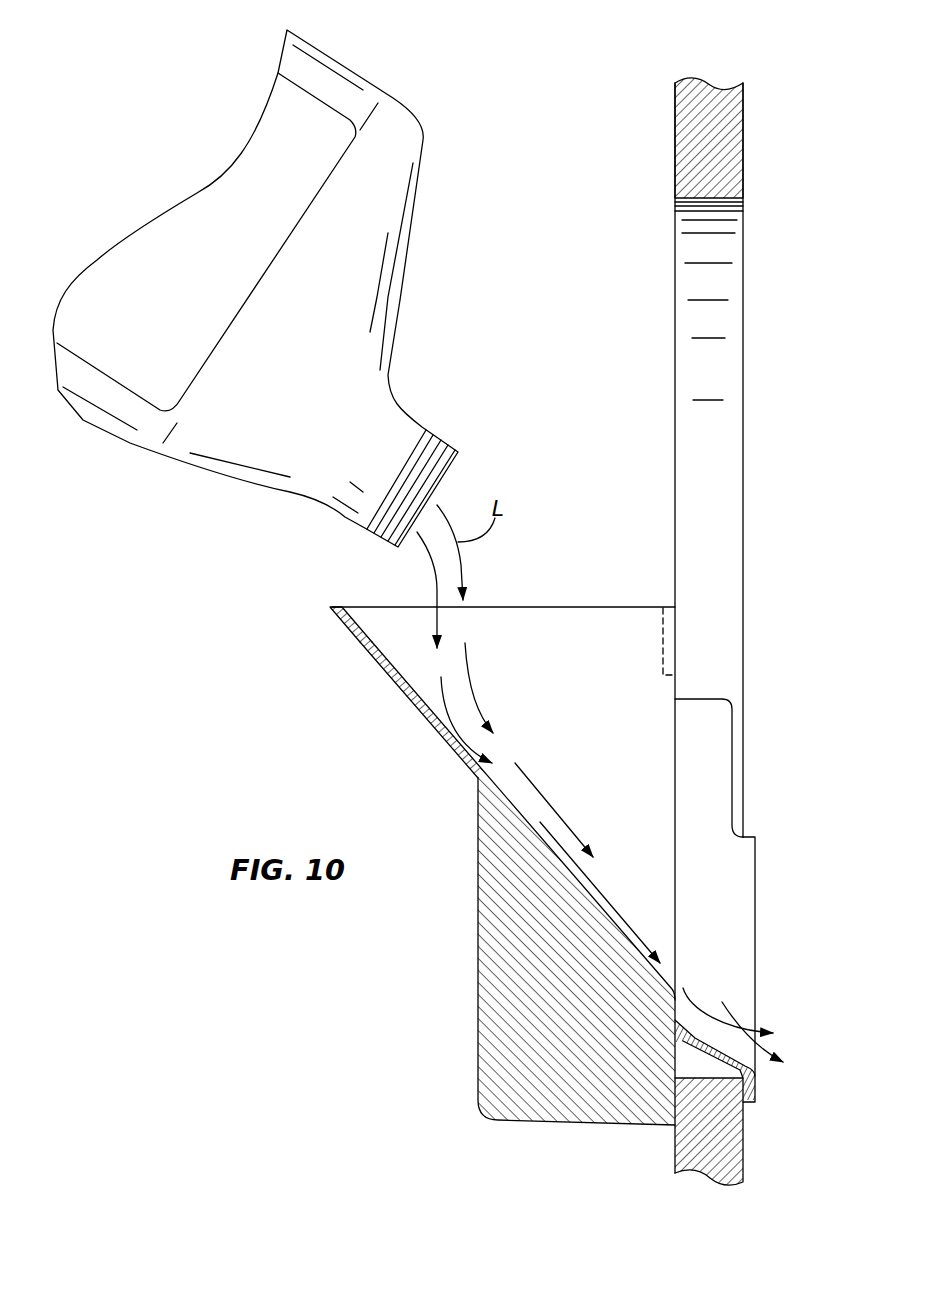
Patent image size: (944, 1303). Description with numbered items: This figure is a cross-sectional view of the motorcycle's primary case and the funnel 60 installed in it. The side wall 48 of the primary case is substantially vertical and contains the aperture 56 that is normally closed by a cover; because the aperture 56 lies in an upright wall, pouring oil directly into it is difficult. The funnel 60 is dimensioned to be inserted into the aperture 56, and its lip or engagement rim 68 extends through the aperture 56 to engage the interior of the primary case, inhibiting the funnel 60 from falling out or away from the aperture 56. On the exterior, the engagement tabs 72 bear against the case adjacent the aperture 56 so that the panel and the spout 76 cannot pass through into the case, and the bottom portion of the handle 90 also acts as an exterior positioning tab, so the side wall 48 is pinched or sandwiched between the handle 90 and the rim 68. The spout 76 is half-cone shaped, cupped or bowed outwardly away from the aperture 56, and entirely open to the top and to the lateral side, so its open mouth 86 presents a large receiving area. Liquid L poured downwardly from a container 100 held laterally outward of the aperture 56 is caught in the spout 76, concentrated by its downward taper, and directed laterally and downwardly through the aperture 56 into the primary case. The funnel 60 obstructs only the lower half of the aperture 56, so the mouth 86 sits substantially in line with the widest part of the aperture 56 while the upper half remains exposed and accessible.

The container 100 is at (378, 197).
The aperture 56 is at (722, 317).
The funnel 60 is at (554, 586).
The engagement tabs 72 is at (658, 640).
The open mouth 86 is at (338, 606).
The spout 76 is at (408, 697).
The handle 90 is at (506, 1037).
The engagement rim 68 is at (757, 1090).
The side wall 48 is at (673, 1152).